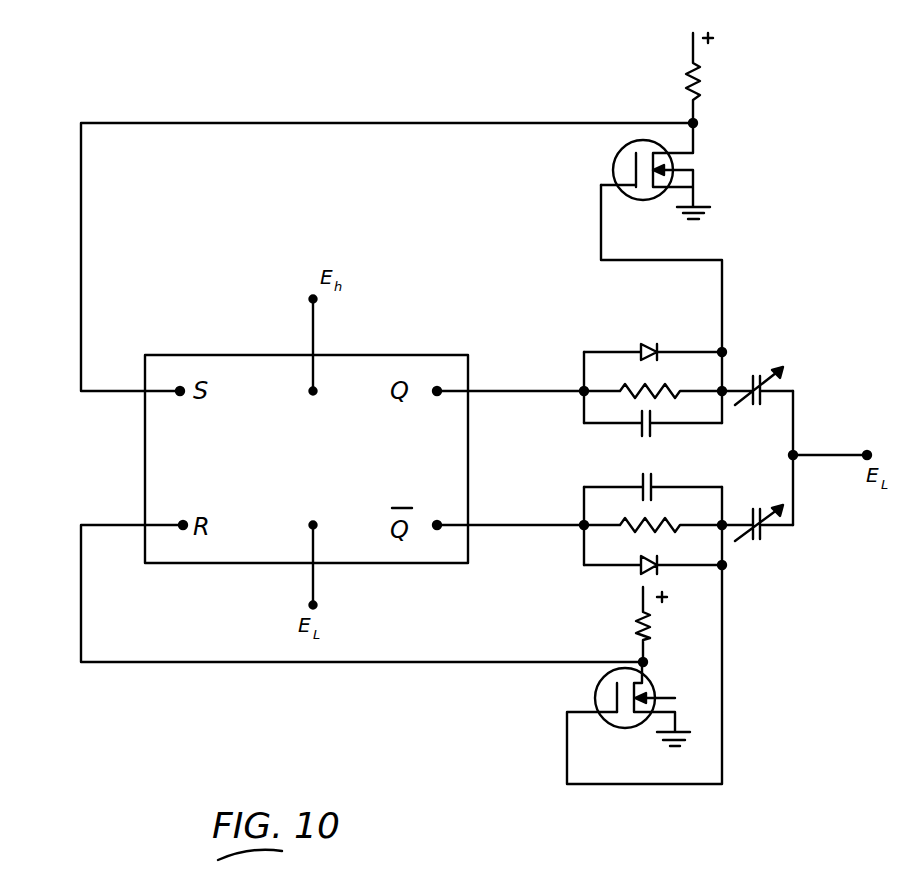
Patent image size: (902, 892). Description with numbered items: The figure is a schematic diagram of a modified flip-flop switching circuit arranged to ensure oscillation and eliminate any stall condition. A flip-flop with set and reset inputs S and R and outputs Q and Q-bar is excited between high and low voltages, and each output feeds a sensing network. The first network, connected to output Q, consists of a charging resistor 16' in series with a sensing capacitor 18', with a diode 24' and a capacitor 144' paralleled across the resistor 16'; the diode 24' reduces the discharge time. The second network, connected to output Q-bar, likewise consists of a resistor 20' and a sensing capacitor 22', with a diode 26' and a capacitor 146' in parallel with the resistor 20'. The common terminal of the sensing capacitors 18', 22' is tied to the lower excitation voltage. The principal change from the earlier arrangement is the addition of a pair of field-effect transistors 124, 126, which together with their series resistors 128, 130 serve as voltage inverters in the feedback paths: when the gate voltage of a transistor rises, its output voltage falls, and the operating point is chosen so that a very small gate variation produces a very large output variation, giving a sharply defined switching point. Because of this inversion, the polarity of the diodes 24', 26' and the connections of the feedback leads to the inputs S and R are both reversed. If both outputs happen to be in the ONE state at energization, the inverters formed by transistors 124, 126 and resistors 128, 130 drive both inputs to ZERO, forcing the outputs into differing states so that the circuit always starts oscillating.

The series resistor 128 is at (698, 83).
The field-effect transistor 124 is at (613, 162).
The diode 24' is at (653, 333).
The resistor 16' is at (653, 375).
The sensing capacitor 18' is at (757, 364).
The capacitor 144' is at (652, 434).
The capacitor 146' is at (657, 469).
The resistor 20' is at (653, 510).
The sensing capacitor 22' is at (763, 542).
The diode 26' is at (652, 579).
The series resistor 130 is at (637, 634).
The field-effect transistor 126 is at (596, 690).